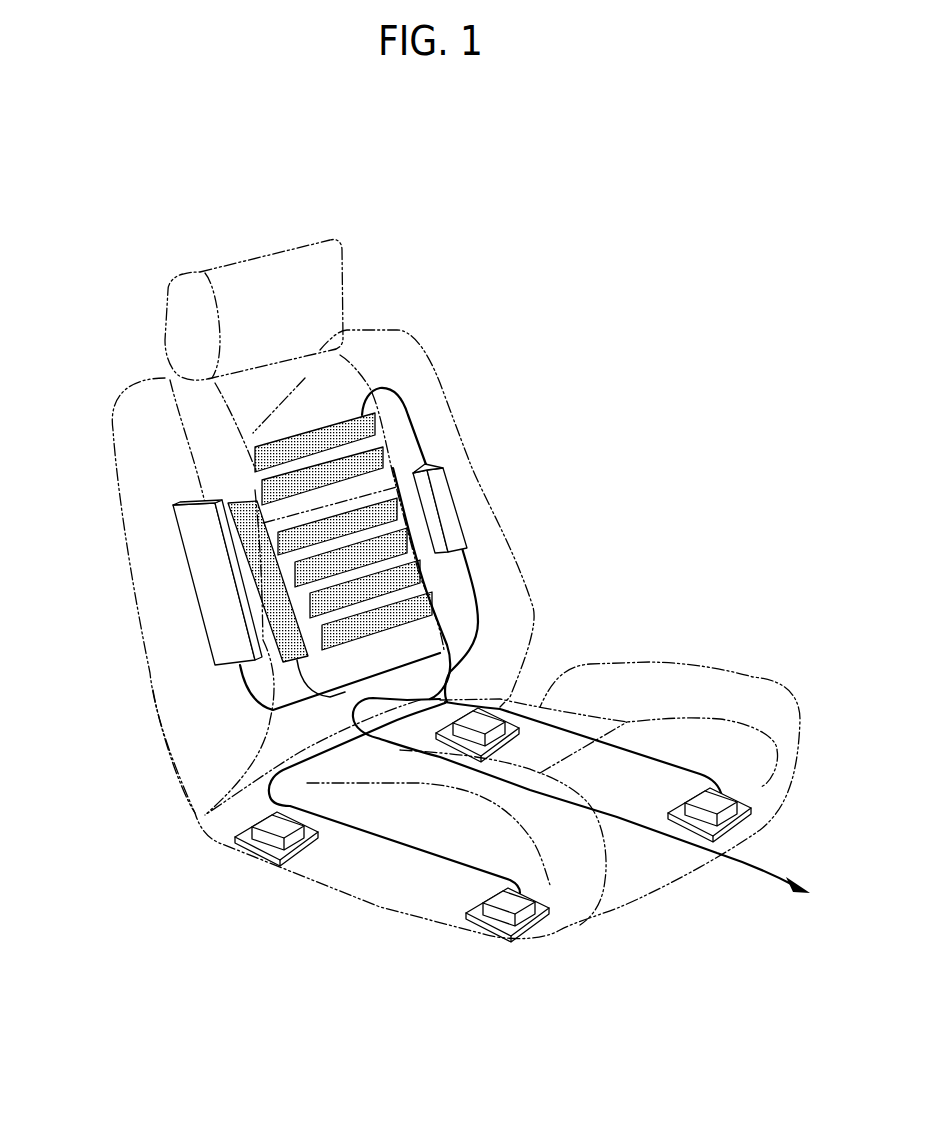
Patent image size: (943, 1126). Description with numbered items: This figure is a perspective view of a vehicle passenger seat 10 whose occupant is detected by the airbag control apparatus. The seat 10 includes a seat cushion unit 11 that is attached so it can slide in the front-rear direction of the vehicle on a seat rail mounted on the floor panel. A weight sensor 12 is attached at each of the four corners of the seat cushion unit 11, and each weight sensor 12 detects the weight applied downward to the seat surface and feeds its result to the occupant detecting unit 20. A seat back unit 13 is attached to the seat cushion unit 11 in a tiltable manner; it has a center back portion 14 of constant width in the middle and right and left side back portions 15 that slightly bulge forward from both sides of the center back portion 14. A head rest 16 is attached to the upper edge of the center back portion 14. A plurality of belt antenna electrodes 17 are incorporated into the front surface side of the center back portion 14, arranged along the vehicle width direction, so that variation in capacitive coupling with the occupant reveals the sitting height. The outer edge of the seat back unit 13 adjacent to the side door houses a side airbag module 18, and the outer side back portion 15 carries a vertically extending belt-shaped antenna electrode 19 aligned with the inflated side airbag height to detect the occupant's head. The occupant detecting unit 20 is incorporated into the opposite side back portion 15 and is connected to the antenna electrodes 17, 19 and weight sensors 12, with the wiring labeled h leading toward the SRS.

The seat 10 is at (478, 213).
The seat cushion unit 11 is at (694, 646).
The weight sensor 12 is at (490, 722).
The seat back unit 13 is at (126, 419).
The center back portion 14 is at (307, 397).
The side back portion 15 is at (368, 338).
The head rest 16 is at (256, 248).
The belt antenna electrode 17 is at (330, 472).
The side airbag module 18 is at (192, 545).
The antenna electrode 19 is at (230, 500).
The occupant detecting unit 20 is at (452, 512).
The wire harness h is at (745, 865).